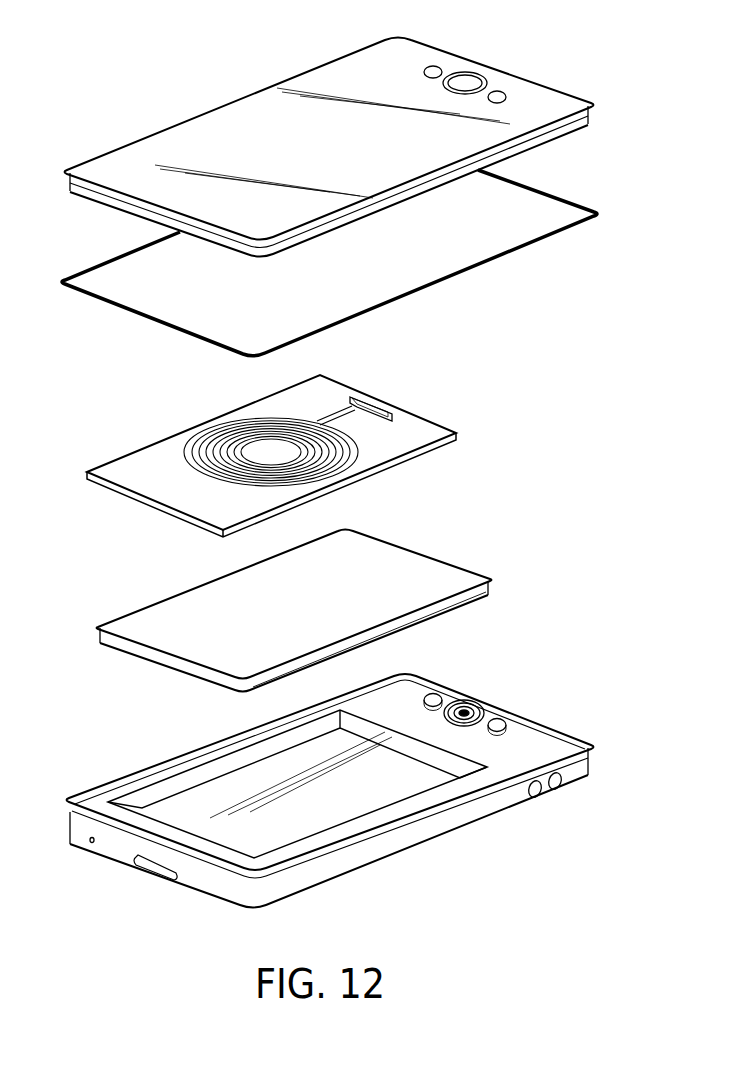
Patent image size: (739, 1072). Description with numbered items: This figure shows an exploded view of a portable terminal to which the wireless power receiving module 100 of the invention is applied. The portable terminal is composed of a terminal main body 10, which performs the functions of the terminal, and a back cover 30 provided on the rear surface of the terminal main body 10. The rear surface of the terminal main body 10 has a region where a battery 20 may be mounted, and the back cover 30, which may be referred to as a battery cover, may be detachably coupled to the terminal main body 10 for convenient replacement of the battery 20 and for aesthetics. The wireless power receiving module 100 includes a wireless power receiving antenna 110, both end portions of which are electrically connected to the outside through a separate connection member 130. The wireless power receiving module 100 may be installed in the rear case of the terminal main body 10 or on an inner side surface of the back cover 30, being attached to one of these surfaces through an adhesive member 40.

The terminal main body 10 is at (383, 848).
The battery 20 is at (168, 620).
The back cover 30 is at (240, 100).
The adhesive member 40 is at (542, 243).
The wireless power receiving module 100 is at (422, 457).
The wireless power receiving antenna 110 is at (183, 447).
The connection member 130 is at (378, 403).